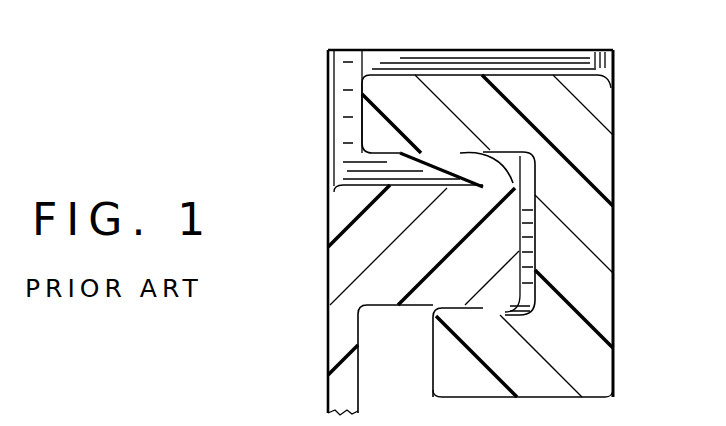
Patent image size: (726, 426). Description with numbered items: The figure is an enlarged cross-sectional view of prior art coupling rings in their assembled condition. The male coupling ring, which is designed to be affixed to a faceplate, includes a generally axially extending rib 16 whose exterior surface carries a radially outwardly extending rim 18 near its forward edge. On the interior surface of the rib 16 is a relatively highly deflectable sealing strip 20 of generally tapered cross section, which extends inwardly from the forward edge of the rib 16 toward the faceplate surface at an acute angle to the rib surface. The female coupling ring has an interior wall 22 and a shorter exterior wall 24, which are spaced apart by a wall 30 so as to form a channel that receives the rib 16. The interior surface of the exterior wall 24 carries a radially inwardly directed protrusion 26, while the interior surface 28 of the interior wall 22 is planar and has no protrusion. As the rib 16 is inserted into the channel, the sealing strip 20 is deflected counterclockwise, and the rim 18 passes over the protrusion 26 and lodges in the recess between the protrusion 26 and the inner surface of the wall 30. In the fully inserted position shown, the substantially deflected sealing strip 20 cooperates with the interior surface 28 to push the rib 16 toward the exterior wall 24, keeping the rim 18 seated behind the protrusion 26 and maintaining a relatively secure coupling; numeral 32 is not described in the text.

The rib 16 is at (363, 243).
The rim 18 is at (503, 297).
The sealing strip 20 is at (449, 163).
The interior wall 22 is at (533, 97).
The exterior wall 24 is at (455, 362).
The protrusion 26 is at (463, 312).
The interior surface 28 is at (372, 151).
The wall 30 is at (577, 213).
The shaft 32 is at (591, 420).